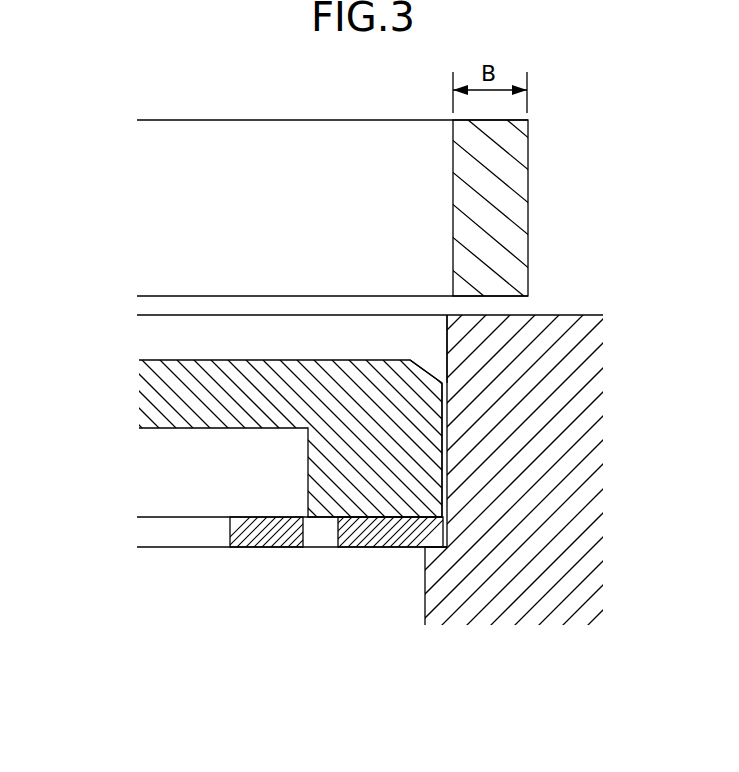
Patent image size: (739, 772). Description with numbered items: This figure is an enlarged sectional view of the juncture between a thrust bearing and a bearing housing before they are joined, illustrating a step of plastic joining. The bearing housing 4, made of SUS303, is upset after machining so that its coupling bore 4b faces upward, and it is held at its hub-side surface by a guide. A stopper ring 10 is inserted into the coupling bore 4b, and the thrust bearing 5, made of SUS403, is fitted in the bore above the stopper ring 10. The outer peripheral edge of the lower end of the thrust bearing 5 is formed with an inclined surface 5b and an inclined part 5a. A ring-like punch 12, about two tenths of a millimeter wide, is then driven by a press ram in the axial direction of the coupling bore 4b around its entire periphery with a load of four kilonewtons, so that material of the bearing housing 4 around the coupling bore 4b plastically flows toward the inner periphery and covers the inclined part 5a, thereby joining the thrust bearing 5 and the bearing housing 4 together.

The bearing housing 4 is at (572, 462).
The coupling bore 4b is at (447, 342).
The thrust bearing 5 is at (165, 399).
The inclined part 5a is at (430, 368).
The inclined surface 5b is at (441, 388).
The stopper ring 10 is at (270, 547).
The ring-like punch 12 is at (505, 214).